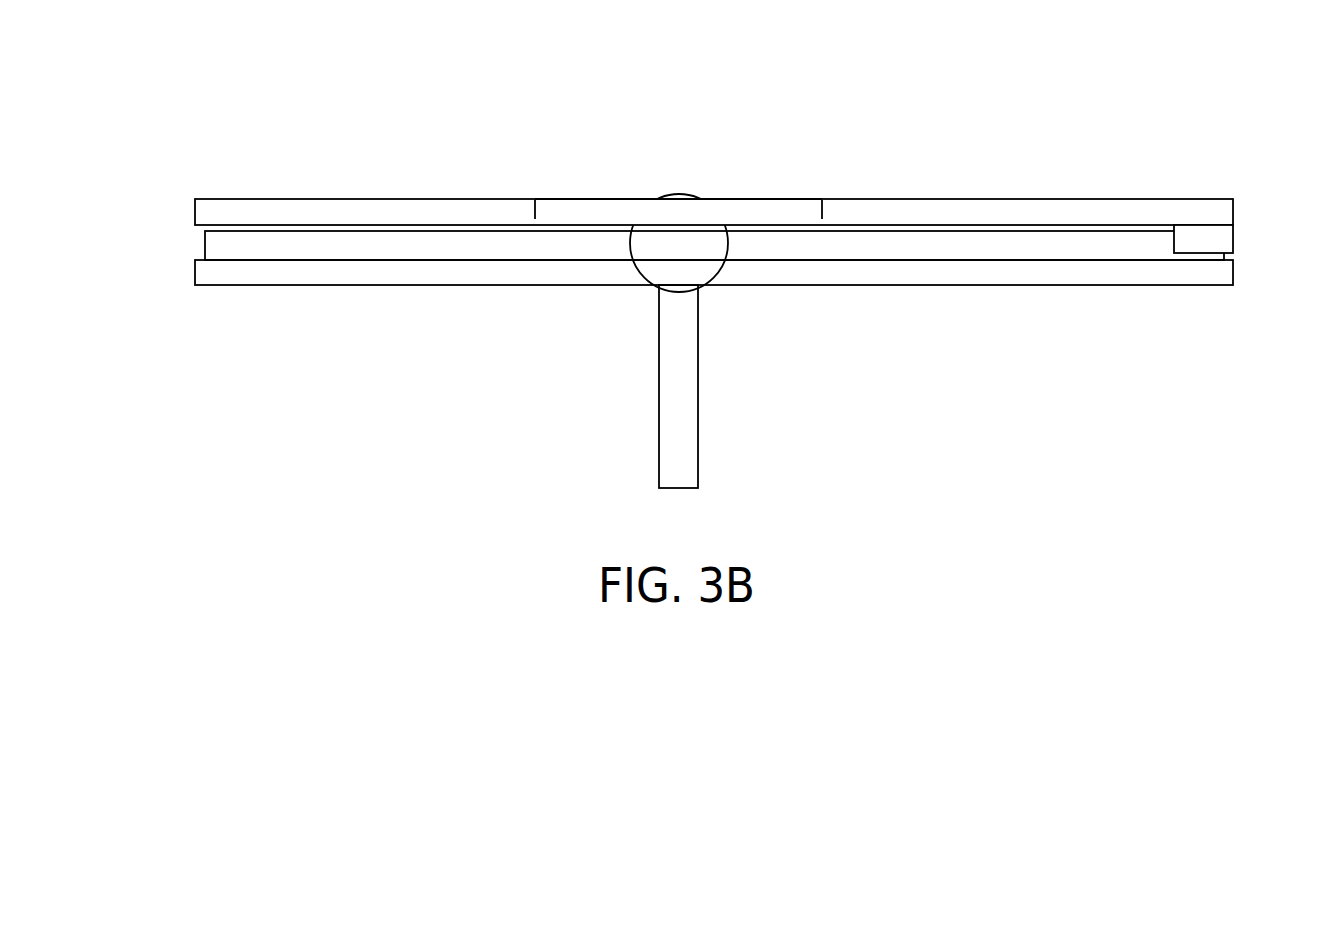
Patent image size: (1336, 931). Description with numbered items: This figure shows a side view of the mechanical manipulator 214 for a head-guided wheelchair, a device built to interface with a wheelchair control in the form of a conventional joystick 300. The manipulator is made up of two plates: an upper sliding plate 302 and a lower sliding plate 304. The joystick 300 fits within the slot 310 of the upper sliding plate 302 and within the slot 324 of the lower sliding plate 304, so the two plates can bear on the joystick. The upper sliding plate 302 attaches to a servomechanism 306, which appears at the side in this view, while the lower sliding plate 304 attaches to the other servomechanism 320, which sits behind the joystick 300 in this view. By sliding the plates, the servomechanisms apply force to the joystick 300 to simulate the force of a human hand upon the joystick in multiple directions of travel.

The mechanical manipulator 214 is at (925, 128).
The joystick 300 is at (700, 252).
The upper sliding plate 302 is at (1082, 218).
The lower sliding plate 304 is at (1110, 268).
The servomechanism 306 is at (1223, 237).
The slot 310 is at (745, 208).
The servomechanism 320 is at (215, 245).
The slot 324 is at (712, 272).